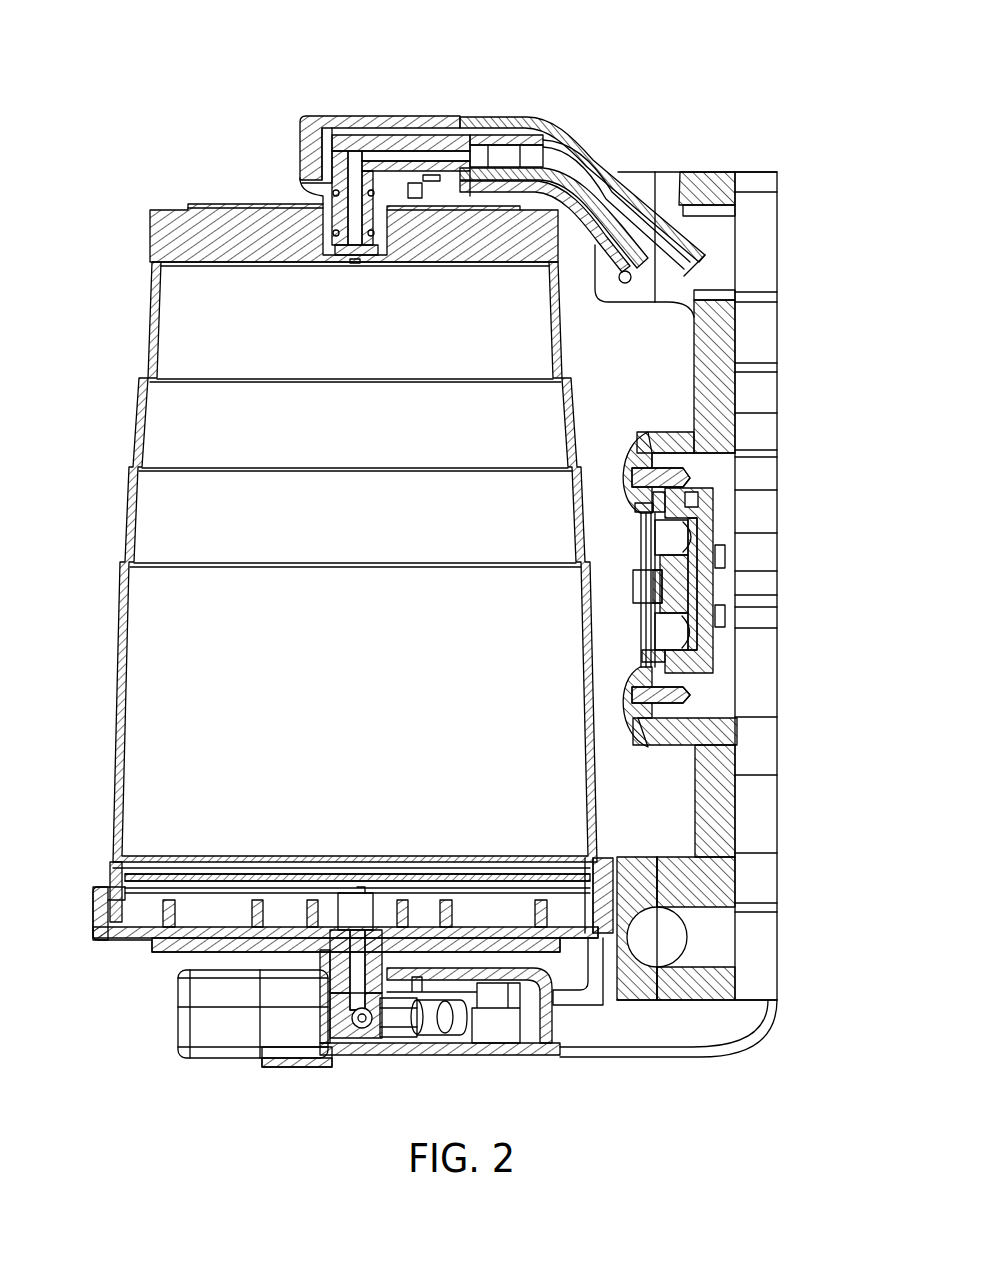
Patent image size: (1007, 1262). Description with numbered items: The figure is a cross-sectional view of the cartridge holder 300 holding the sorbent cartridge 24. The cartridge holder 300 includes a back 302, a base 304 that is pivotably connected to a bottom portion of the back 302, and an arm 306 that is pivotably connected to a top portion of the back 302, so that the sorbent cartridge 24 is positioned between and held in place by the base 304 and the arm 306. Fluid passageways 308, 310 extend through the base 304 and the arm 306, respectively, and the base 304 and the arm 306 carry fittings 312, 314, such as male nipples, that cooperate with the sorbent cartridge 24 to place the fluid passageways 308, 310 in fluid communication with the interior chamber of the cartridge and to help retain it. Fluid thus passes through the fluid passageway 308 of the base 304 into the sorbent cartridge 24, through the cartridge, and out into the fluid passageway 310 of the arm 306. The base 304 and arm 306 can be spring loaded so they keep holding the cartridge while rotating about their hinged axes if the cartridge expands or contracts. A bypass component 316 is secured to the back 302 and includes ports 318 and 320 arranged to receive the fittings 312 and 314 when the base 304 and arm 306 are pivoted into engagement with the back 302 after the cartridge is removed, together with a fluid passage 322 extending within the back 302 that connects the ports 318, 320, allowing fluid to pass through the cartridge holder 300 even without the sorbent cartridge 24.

The cartridge holder 300 is at (134, 47).
The sorbent cartridge 24 is at (118, 737).
The back 302 is at (763, 679).
The base 304 is at (293, 1066).
The arm 306 is at (408, 115).
The fluid passageway 308 is at (355, 985).
The fluid passageway 310 is at (553, 128).
The fitting 312 is at (432, 893).
The fitting 314 is at (302, 190).
The bypass component 316 is at (708, 525).
The port 318 is at (668, 645).
The port 320 is at (634, 433).
The fluid passage 322 is at (693, 590).